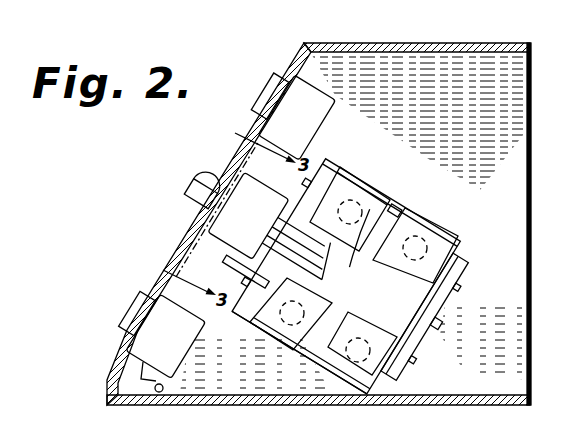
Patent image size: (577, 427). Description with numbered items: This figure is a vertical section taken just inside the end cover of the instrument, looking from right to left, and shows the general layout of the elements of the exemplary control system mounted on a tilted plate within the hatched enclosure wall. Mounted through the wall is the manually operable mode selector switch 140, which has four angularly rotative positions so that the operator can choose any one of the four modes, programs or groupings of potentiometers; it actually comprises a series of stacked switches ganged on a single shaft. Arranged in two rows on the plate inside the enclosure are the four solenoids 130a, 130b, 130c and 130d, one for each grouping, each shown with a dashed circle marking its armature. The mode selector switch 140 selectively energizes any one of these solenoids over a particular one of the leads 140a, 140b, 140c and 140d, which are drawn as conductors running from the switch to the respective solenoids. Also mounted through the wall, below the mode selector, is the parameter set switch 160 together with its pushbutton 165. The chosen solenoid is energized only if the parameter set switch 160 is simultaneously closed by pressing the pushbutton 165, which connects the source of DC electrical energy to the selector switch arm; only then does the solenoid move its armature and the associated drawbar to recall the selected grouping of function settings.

The mode selector switch 140 is at (187, 185).
The parameter set switch 160 is at (106, 337).
The pushbutton 165 is at (140, 293).
The solenoid 130a is at (350, 183).
The solenoid 130b is at (430, 227).
The solenoid 130c is at (293, 338).
The solenoid 130d is at (359, 375).
The lead 140a is at (313, 190).
The lead 140b is at (400, 208).
The lead 140c is at (262, 258).
The lead 140d is at (422, 343).